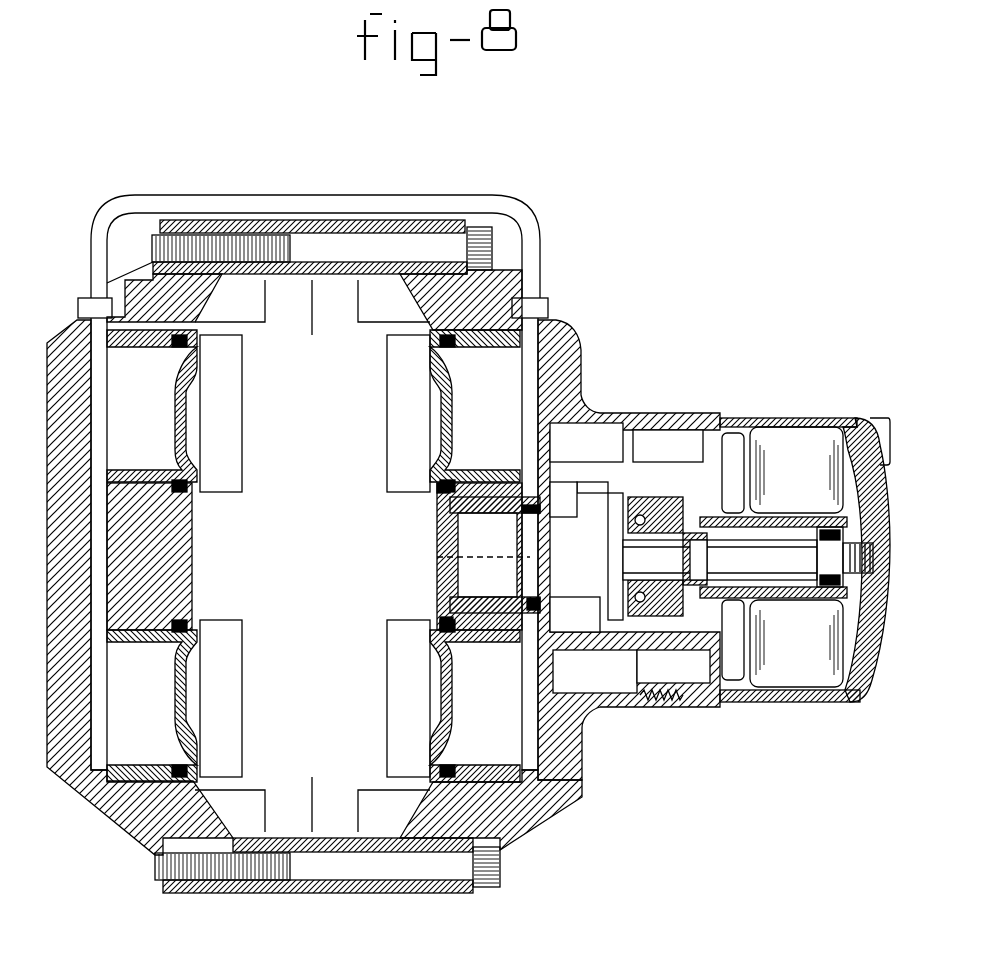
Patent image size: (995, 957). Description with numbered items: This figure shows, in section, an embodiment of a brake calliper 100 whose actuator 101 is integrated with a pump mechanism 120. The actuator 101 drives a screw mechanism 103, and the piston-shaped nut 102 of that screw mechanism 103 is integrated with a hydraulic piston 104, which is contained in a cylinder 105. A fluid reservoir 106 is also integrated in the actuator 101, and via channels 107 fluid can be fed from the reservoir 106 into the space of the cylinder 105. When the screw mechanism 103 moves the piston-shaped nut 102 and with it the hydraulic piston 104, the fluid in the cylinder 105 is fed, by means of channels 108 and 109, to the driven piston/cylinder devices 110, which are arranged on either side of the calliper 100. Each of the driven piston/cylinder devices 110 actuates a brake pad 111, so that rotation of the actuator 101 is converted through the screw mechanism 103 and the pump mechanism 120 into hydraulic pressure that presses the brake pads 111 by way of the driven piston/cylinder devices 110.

The brake calliper 100 is at (588, 347).
The actuator 101 is at (805, 418).
The piston-shaped nut 102 is at (570, 618).
The screw mechanism 103 is at (735, 420).
The hydraulic piston 104 is at (578, 512).
The cylinder 105 is at (465, 555).
The fluid reservoir 106 is at (672, 445).
The channels 107 is at (583, 428).
The channels 108 is at (440, 527).
The channels 109 is at (505, 197).
The driven piston/cylinder devices 110 is at (386, 384).
The brake pad 111 is at (393, 437).
The pump mechanism 120 is at (650, 620).